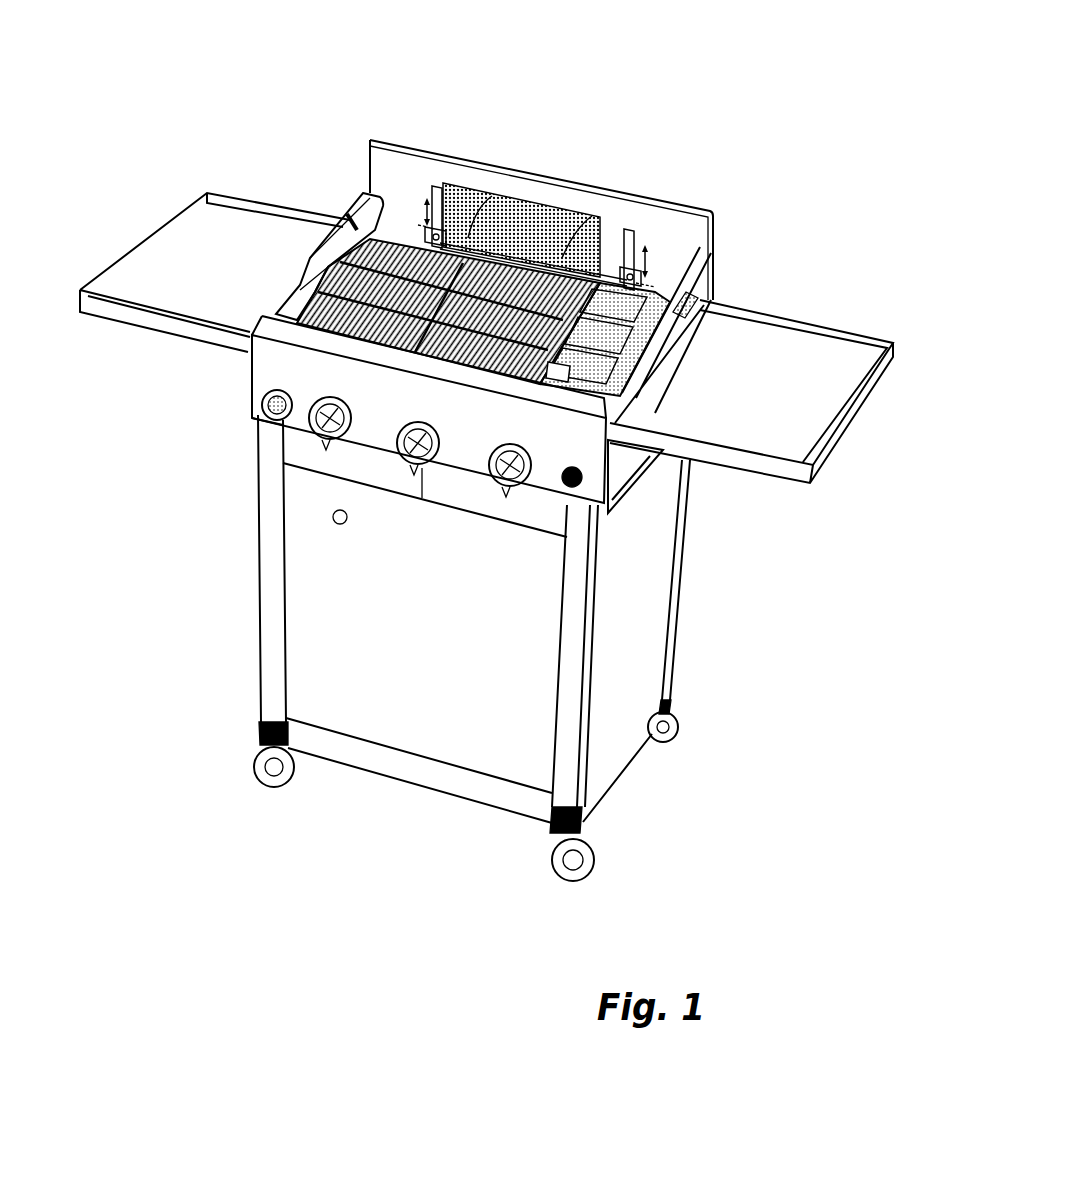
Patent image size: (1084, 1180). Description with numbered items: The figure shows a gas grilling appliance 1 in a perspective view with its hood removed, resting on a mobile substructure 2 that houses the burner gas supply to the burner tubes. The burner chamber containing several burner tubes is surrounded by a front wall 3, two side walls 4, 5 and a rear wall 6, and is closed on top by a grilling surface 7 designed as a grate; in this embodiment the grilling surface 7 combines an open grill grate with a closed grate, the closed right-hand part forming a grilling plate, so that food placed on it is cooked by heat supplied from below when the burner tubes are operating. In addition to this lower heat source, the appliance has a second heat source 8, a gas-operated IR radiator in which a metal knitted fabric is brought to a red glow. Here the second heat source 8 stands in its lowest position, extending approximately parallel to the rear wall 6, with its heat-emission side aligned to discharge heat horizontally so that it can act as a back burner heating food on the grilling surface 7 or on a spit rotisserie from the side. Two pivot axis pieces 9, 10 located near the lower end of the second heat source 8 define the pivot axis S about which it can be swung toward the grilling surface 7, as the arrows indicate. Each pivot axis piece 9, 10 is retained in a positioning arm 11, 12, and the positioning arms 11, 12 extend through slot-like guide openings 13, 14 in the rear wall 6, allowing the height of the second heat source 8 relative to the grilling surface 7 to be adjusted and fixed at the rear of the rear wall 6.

The gas grilling appliance 1 is at (708, 150).
The mobile substructure 2 is at (248, 578).
The front wall 3 is at (481, 428).
The side wall 4 is at (632, 454).
The side wall 5 is at (244, 383).
The rear wall 6 is at (718, 227).
The grilling surface 7 is at (322, 222).
The second heat source 8 is at (507, 192).
The pivot axis piece 9 is at (610, 262).
The pivot axis piece 10 is at (372, 140).
The positioning arm 11 is at (633, 260).
The positioning arm 12 is at (340, 262).
The guide opening 13 is at (628, 226).
The guide opening 14 is at (418, 214).
The pivot axis S is at (652, 273).